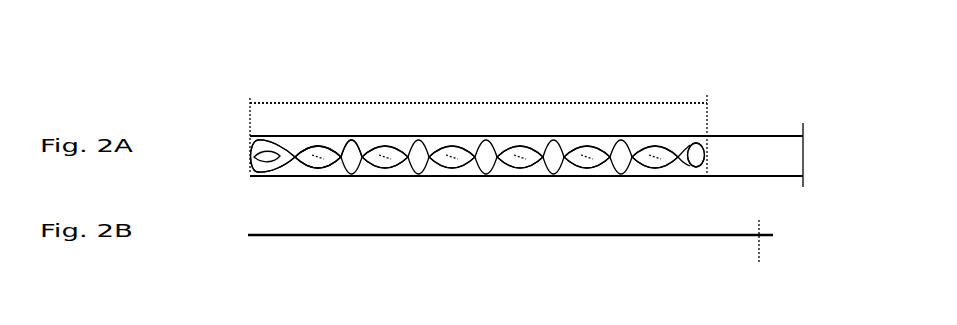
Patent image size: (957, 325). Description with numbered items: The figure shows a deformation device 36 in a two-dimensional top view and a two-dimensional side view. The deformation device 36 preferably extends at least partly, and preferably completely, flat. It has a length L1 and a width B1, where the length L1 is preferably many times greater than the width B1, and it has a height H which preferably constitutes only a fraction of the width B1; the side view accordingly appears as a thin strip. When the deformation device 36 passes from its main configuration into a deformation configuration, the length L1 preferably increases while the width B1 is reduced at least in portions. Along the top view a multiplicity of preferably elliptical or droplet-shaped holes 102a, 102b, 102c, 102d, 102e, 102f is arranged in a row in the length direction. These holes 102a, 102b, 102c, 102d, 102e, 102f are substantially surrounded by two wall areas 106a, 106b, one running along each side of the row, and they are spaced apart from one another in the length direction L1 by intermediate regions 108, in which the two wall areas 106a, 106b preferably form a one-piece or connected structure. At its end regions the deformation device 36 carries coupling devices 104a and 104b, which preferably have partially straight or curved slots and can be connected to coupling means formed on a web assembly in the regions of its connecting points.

In FIG. 2A, the deformation device 36 is at (330, 84).
In FIG. 2A, the hole 102a is at (341, 163).
In FIG. 2A, the hole 102b is at (411, 164).
In FIG. 2A, the hole 102c is at (453, 150).
In FIG. 2A, the hole 102d is at (524, 152).
In FIG. 2A, the hole 102e is at (608, 165).
In FIG. 2A, the hole 102f is at (656, 150).
In FIG. 2A, the coupling device 104a is at (251, 152).
In FIG. 2A, the coupling device 104b is at (706, 150).
In FIG. 2A, the wall area 106a is at (310, 136).
In FIG. 2A, the wall area 106b is at (328, 168).
In FIG. 2A, the intermediate region 108 is at (343, 137).
In FIG. 2A, the length L1 is at (604, 103).
In FIG. 2A, the width B1 is at (803, 152).
In FIG. 2B, the height H is at (773, 235).